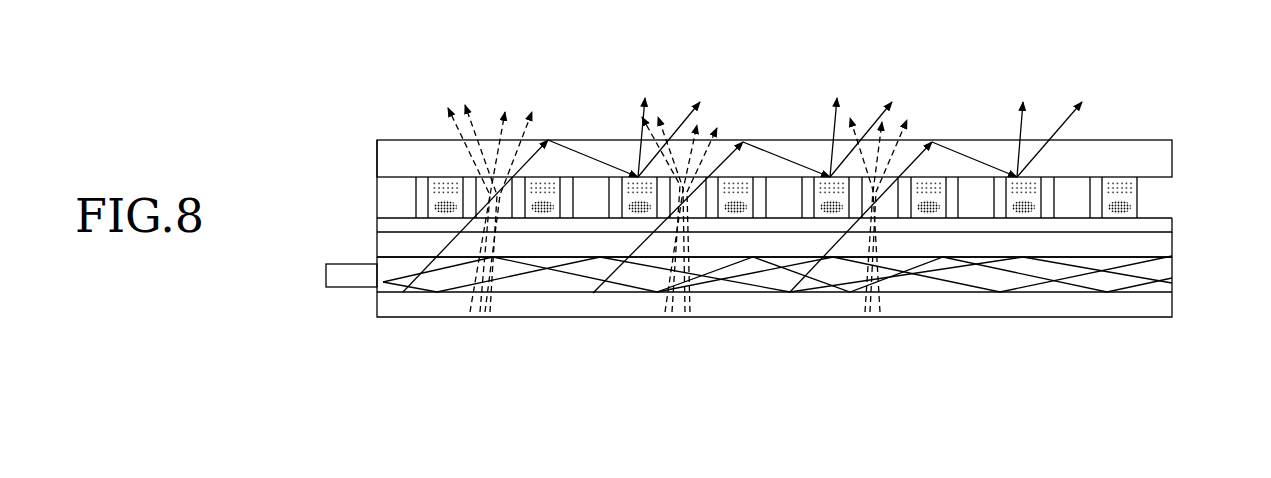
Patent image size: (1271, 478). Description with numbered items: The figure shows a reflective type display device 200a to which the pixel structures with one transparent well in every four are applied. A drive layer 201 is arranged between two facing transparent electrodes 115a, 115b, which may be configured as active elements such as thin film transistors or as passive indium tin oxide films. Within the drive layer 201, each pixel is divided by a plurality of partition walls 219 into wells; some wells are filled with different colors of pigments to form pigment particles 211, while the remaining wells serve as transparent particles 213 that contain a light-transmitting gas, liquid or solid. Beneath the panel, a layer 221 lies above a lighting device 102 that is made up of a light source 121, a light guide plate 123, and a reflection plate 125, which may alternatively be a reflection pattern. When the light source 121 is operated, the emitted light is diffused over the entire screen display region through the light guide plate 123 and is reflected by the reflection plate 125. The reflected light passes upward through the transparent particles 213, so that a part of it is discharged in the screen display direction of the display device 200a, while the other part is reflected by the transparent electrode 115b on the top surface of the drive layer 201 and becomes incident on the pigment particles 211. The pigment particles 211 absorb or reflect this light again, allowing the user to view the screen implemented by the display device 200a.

The reflective type display device 200a is at (1152, 110).
The drive layer 201 is at (1152, 202).
The pigment particles 211 is at (437, 180).
The transparent particles 213 is at (585, 190).
The partition walls 219 is at (807, 180).
The adhesive layer 221 is at (1165, 227).
The transparent electrode 115a is at (383, 242).
The transparent electrode 115b is at (390, 160).
The lighting device 102 is at (472, 412).
The light source 121 is at (350, 279).
The light guide plate 123 is at (405, 282).
The reflection plate 125 is at (475, 302).